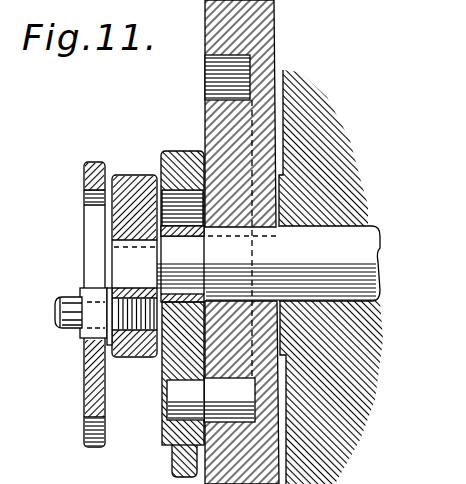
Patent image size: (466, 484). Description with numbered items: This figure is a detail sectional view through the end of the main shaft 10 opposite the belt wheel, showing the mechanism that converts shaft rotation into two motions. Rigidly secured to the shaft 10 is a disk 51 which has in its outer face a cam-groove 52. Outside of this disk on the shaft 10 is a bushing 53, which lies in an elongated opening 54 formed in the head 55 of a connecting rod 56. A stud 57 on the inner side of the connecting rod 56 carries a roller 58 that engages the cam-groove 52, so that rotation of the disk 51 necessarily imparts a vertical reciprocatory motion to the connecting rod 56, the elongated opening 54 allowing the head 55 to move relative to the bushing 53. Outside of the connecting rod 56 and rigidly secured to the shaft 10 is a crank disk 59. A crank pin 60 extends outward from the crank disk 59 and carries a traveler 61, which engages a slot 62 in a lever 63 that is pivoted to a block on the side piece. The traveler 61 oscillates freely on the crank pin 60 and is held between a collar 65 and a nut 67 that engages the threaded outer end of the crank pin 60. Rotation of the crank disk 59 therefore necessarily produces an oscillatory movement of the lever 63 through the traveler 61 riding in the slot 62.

The shaft 10 is at (248, 263).
The disk 51 is at (263, 27).
The cam-groove 52 is at (205, 65).
The bushing 53 is at (181, 246).
The elongated opening 54 is at (161, 163).
The head 55 is at (164, 362).
The connecting rod 56 is at (178, 465).
The stud 57 is at (199, 402).
The roller 58 is at (244, 402).
The crank disk 59 is at (118, 174).
The crank pin 60 is at (56, 315).
The traveler 61 is at (93, 308).
The slot 62 is at (88, 213).
The lever 63 is at (52, 426).
The collar 65 is at (113, 358).
The nut 67 is at (66, 333).